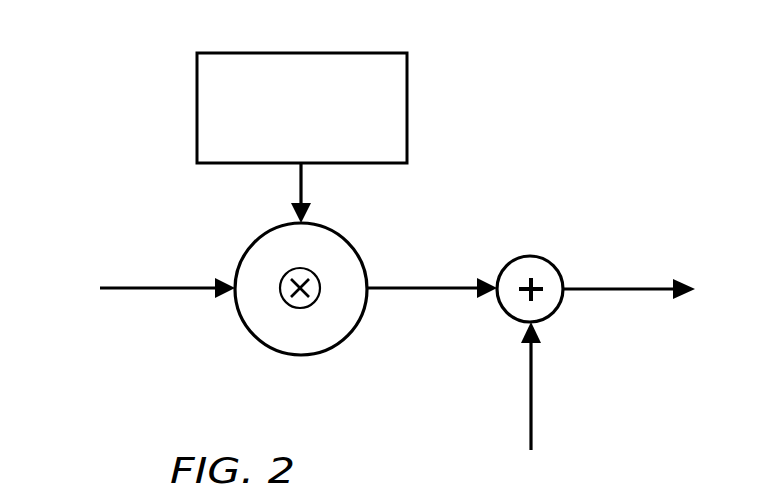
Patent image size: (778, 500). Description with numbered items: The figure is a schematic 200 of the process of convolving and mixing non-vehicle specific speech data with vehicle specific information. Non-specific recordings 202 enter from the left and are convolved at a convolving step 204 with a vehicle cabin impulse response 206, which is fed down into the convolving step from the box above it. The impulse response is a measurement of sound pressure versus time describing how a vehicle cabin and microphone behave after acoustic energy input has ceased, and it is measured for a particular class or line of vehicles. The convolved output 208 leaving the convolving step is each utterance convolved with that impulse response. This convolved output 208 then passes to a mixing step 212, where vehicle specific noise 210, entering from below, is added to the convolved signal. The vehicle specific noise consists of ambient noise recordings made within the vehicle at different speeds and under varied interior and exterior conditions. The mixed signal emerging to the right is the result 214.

The signal processing system 200 is at (173, 50).
The non-specific recordings 202 is at (162, 288).
The convolving step 204 is at (342, 341).
The vehicle cabin impulse response 206 is at (321, 150).
The convolved output 208 is at (407, 288).
The vehicle specific noise 210 is at (532, 392).
The mixing step 212 is at (548, 258).
The result 214 is at (617, 288).